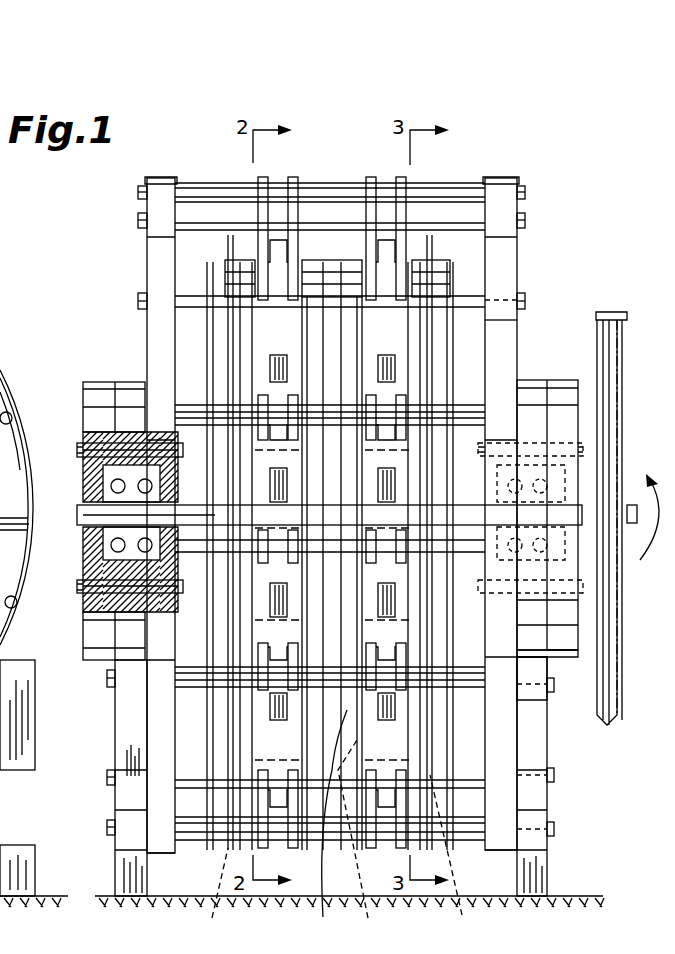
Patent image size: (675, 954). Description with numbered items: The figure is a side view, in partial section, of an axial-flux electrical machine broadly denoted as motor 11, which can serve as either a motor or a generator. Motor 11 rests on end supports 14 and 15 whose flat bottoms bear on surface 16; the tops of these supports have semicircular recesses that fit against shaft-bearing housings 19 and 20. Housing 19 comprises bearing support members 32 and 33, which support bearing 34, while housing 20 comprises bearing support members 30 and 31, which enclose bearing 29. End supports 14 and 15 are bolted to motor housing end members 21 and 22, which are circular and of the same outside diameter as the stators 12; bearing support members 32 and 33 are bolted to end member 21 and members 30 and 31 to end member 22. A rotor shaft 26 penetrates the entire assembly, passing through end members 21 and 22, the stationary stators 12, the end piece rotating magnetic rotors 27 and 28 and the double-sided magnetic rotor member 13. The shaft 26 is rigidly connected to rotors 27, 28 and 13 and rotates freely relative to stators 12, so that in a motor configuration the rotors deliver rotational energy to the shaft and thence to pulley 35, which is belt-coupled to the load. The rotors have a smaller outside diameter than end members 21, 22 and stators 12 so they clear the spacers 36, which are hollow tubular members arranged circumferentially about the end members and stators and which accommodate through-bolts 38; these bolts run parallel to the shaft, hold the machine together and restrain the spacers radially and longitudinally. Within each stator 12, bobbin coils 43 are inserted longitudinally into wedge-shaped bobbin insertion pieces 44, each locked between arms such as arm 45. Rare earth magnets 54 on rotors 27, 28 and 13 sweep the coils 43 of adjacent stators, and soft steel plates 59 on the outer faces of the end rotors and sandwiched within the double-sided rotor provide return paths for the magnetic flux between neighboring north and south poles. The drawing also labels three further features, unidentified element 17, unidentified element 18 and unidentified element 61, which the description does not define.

The motor 11 is at (525, 260).
The stators 12 is at (275, 175).
The double-sided magnetic rotor member 13 is at (336, 240).
The end support 14 is at (547, 805).
The end support 15 is at (108, 797).
The surface 16 is at (580, 896).
The bearing block 17 is at (550, 660).
The bolts 18 is at (107, 665).
The shaft-bearing housing 19 is at (568, 657).
The shaft-bearing housing 20 is at (87, 658).
The motor housing end member 21 is at (520, 327).
The motor housing end member 22 is at (145, 358).
The rotor shaft 26 is at (646, 532).
The end piece rotating magnetic rotor 27 is at (450, 240).
The end piece rotating magnetic rotor 28 is at (203, 256).
The bearing 29 is at (77, 488).
The bearing support member 30 is at (123, 380).
The bearing support member 31 is at (83, 385).
The bearing support member 32 is at (527, 380).
The bearing support member 33 is at (555, 378).
The bearing 34 is at (557, 487).
The pulley 35 is at (628, 650).
The spacers 36 is at (190, 293).
The through-bolts 38 is at (520, 300).
The bobbin coils 43 is at (127, 745).
The bobbin insertion piece 44 is at (17, 593).
The arm 45 is at (0, 375).
The rare earth magnets 54 is at (340, 841).
The soft steel plates 59 is at (223, 657).
The guide plates 61 is at (213, 365).